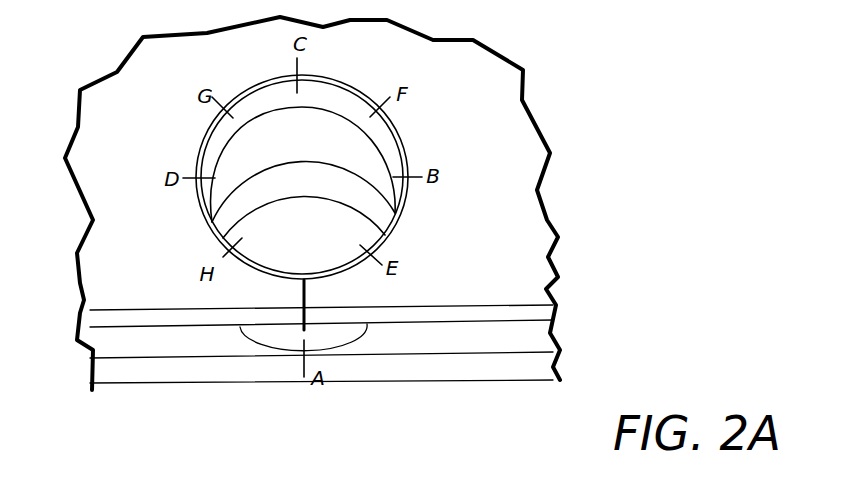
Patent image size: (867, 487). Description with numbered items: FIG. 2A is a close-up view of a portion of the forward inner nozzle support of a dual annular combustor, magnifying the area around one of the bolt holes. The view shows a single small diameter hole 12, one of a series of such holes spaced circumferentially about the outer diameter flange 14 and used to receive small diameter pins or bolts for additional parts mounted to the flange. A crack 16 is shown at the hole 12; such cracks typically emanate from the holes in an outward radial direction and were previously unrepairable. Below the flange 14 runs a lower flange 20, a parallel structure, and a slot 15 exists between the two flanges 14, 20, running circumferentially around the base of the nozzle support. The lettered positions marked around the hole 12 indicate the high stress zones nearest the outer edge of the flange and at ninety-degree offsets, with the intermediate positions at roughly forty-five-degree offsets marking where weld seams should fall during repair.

The small diameter hole 12 is at (273, 152).
The outer diameter flange 14 is at (453, 182).
The slot 15 is at (508, 342).
The crack 16 is at (303, 302).
The lower flange 20 is at (178, 375).